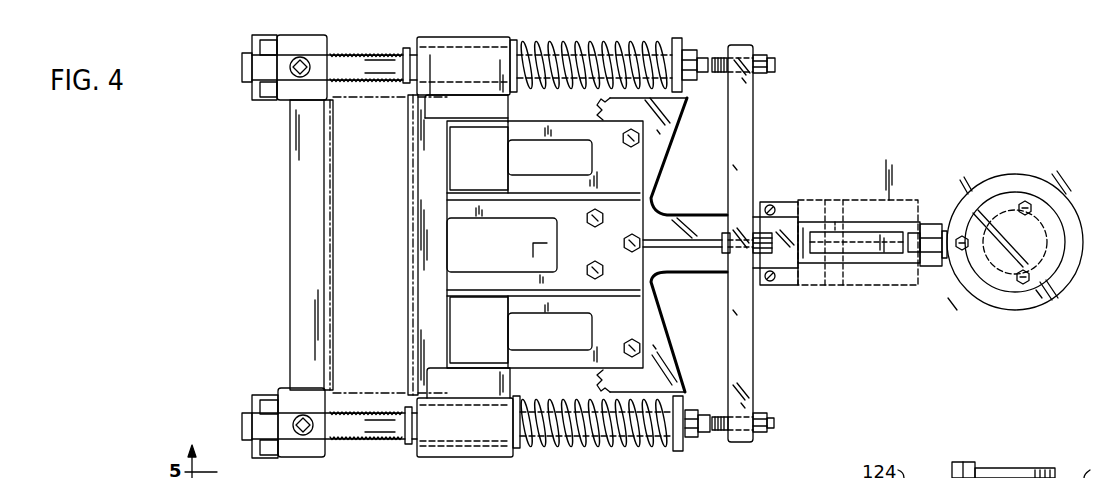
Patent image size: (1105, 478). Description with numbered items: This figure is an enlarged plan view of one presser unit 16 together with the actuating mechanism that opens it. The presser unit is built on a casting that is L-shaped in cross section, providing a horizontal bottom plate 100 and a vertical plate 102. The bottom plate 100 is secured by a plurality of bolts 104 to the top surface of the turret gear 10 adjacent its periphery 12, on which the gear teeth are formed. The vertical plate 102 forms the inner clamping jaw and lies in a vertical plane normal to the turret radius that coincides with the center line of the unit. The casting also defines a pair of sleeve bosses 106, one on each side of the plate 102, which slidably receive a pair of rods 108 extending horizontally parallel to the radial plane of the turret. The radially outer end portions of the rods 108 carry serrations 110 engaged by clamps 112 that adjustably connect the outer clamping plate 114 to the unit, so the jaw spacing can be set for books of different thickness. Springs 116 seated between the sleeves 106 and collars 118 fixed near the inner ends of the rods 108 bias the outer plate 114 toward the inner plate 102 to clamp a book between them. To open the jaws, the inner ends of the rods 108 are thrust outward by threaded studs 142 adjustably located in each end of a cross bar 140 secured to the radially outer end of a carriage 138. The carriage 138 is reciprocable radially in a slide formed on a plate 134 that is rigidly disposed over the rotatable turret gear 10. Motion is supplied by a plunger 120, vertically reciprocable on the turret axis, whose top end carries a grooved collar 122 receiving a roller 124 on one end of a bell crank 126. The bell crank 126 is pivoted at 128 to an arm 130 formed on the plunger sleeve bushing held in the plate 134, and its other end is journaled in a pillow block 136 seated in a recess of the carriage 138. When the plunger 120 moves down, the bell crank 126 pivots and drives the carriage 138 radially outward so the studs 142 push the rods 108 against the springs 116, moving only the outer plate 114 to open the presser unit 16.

The turret gear 10 is at (680, 121).
The periphery 12 is at (598, 98).
The presser unit 16 is at (276, 258).
The bottom plate 100 is at (536, 180).
The vertical plate 102 is at (410, 210).
The bolts 104 is at (634, 147).
The sleeve bosses 106 is at (450, 38).
The rods 108 is at (388, 52).
The serrations 110 is at (332, 78).
The clamps 112 is at (268, 98).
The outer clamping plate 114 is at (325, 217).
The springs 116 is at (580, 47).
The collars 118 is at (680, 45).
The plunger 120 is at (992, 210).
The grooved collar 122 is at (1016, 174).
The roller 124 is at (918, 233).
The bell crank 126 is at (895, 264).
The pivot 128 is at (820, 205).
The arm 130 is at (850, 198).
The plate 134 is at (798, 286).
The pillow block 136 is at (848, 286).
The carriage 138 is at (772, 256).
The cross bar 140 is at (752, 152).
The threaded studs 142 is at (770, 56).